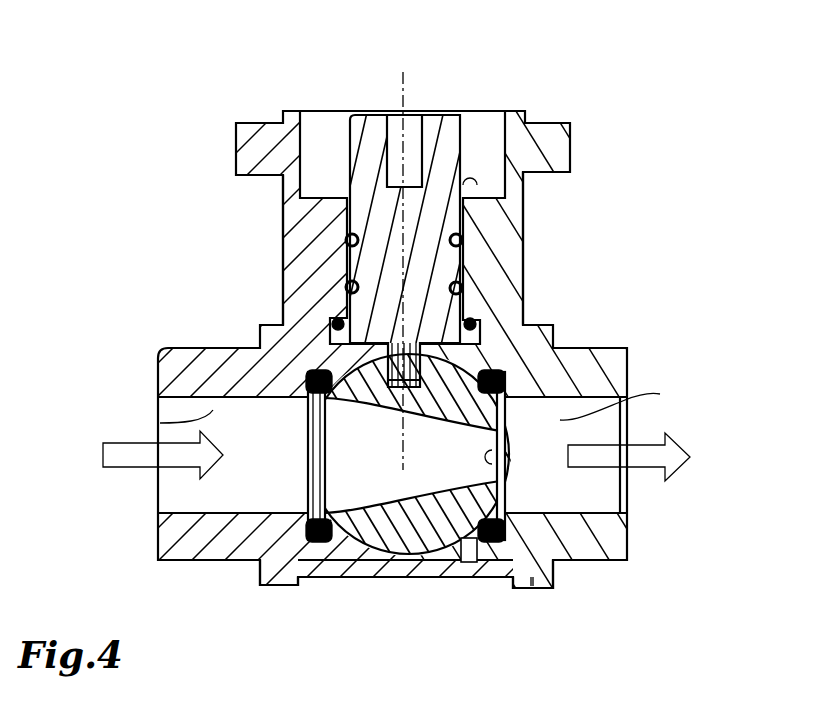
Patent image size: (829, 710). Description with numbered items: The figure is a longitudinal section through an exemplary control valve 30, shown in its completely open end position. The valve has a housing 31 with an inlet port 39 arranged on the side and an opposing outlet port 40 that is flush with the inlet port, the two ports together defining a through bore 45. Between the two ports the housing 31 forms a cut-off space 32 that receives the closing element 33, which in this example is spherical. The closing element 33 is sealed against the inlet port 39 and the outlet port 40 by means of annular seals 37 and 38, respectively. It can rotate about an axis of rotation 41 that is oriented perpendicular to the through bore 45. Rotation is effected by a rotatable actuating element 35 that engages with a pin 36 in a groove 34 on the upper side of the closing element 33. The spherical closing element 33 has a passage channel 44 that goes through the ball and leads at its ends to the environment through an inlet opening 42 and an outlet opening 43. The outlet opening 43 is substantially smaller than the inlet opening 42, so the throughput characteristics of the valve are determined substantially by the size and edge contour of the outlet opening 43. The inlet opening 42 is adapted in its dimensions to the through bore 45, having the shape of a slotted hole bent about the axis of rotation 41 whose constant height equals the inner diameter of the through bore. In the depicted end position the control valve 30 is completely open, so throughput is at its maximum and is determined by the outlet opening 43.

The control valve 30 is at (600, 140).
The housing 31 is at (498, 238).
The cut-off space 32 is at (355, 570).
The closing element 33 is at (437, 575).
The groove 34 is at (525, 287).
The actuating element 35 is at (385, 267).
The pin 36 is at (333, 350).
The annular seal 37 is at (265, 585).
The annular seal 38 is at (560, 567).
The inlet port 39 is at (185, 378).
The outlet port 40 is at (653, 358).
The axis of rotation 41 is at (396, 90).
The inlet opening 42 is at (303, 467).
The outlet opening 43 is at (515, 468).
The passage channel 44 is at (410, 455).
The through bore 45 is at (660, 394).